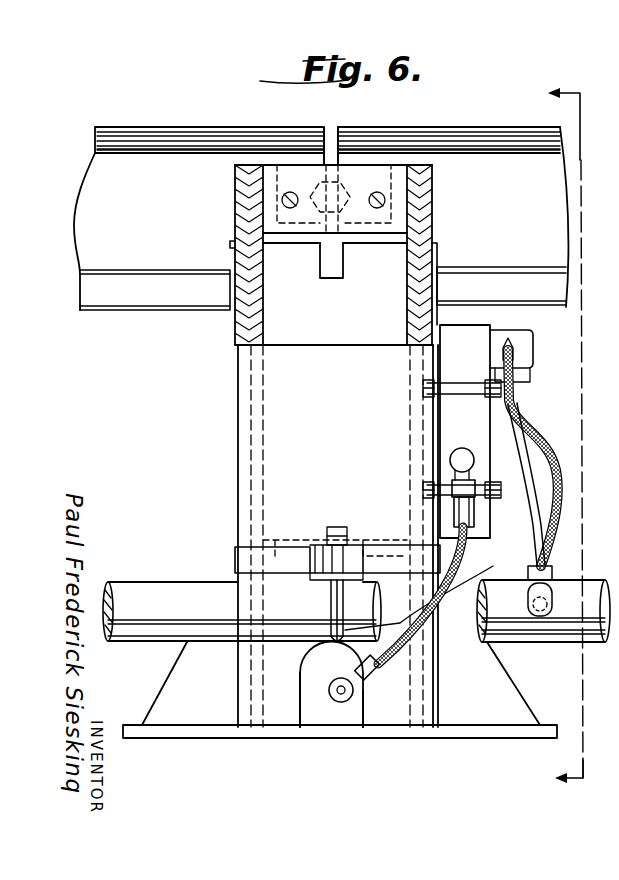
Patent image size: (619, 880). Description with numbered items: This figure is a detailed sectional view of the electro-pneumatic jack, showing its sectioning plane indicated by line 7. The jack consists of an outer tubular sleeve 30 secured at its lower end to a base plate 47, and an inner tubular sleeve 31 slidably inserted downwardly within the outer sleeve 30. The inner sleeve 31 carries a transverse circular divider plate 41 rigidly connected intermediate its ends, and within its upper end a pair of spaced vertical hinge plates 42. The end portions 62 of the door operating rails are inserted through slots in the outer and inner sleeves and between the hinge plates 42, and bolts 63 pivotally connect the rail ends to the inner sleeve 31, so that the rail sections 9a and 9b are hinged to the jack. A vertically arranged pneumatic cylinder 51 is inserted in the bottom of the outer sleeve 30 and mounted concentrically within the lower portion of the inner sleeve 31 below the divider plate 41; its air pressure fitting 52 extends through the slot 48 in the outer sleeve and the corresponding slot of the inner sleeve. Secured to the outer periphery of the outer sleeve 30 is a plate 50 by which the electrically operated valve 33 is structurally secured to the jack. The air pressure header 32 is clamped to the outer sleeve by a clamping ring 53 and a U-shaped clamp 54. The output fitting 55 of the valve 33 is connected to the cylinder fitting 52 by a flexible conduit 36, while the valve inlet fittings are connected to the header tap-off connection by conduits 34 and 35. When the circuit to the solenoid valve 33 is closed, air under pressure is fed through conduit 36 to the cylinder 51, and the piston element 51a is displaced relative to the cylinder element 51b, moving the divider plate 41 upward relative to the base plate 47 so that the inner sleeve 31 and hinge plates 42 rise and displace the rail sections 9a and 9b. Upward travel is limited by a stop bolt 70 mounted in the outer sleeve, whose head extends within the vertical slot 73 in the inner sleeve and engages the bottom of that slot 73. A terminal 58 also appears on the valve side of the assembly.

The section line 7 is at (576, 438).
The rail section 9a is at (473, 153).
The rail section 9b is at (91, 226).
The outer tubular sleeve 30 is at (248, 306).
The inner tubular sleeve 31 is at (233, 250).
The air pressure header 32 is at (147, 630).
The electrically operated valve 33 is at (470, 408).
The conduit 34 is at (522, 462).
The conduit 35 is at (560, 505).
The flexible conduit 36 is at (427, 585).
The divider plate 41 is at (298, 523).
The hinge plates 42 is at (375, 173).
The base plate 47 is at (467, 732).
The slot 48 is at (279, 714).
The plate 50 is at (431, 418).
The pneumatic cylinder 51 is at (287, 653).
The piston element 51a is at (328, 717).
The cylinder element 51b is at (300, 675).
The air pressure fitting 52 is at (353, 703).
The clamping ring 53 is at (236, 560).
The U-shaped clamp 54 is at (390, 634).
The output fitting 55 is at (452, 459).
The terminal 58 is at (520, 352).
The end portions of the rails 62 is at (275, 153).
The bolts 63 is at (282, 198).
The stop bolt 70 is at (318, 208).
The vertical slot 73 is at (338, 277).